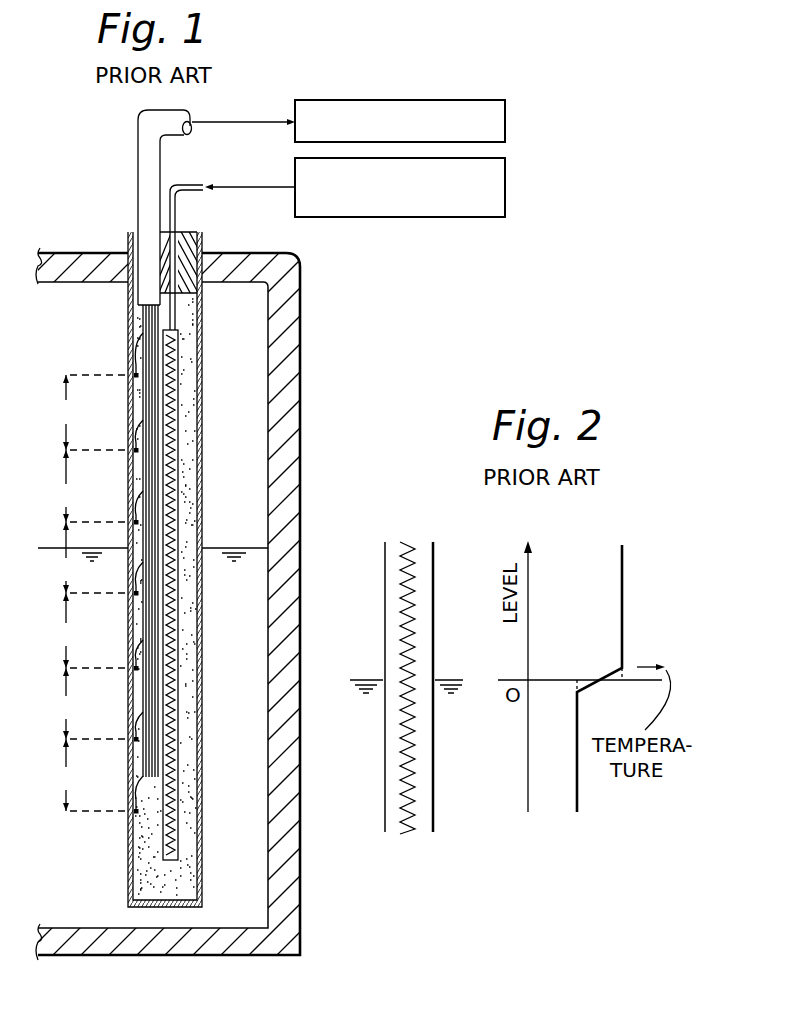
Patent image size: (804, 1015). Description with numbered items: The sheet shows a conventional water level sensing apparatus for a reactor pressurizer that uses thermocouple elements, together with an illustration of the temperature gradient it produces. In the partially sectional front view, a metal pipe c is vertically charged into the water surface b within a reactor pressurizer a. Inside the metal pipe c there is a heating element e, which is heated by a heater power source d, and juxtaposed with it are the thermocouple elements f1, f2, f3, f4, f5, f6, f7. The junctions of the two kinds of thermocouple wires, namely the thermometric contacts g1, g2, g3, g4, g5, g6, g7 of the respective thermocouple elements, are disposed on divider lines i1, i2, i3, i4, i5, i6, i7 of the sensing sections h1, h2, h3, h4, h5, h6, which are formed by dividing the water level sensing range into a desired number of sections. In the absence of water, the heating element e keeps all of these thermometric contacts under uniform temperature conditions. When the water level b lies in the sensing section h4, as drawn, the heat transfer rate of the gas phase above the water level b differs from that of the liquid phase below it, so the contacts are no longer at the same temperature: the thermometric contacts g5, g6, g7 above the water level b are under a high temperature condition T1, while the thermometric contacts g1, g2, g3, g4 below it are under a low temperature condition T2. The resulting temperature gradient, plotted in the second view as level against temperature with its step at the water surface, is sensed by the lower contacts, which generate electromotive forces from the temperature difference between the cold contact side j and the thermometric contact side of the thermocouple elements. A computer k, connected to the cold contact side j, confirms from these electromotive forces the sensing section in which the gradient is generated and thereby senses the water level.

In FIG. 1, the reactor pressurizer a is at (302, 283).
In FIG. 1, the water surface b is at (236, 548).
In FIG. 2, the water surface b is at (362, 680).
In FIG. 1, the metal pipe c is at (203, 344).
In FIG. 1, the heater power source d is at (505, 187).
In FIG. 1, the heating element e is at (172, 441).
In FIG. 2, the heating element e is at (408, 583).
In FIG. 1, the thermocouple element f1 is at (142, 776).
In FIG. 1, the thermocouple element f2 is at (142, 712).
In FIG. 1, the thermocouple element f3 is at (142, 640).
In FIG. 1, the thermocouple element f4 is at (142, 562).
In FIG. 1, the thermocouple element f5 is at (142, 491).
In FIG. 1, the thermocouple element f6 is at (142, 420).
In FIG. 1, the thermocouple element f7 is at (142, 333).
In FIG. 1, the thermometric contact g1 is at (135, 813).
In FIG. 1, the thermometric contact g2 is at (135, 740).
In FIG. 1, the thermometric contact g3 is at (135, 669).
In FIG. 1, the thermometric contact g4 is at (135, 594).
In FIG. 1, the thermometric contact g5 is at (135, 523).
In FIG. 1, the thermometric contact g6 is at (135, 451).
In FIG. 1, the thermometric contact g7 is at (135, 376).
In FIG. 1, the sensing section h1 is at (66, 775).
In FIG. 1, the sensing section h2 is at (66, 703).
In FIG. 1, the sensing section h3 is at (66, 630).
In FIG. 1, the sensing section h4 is at (66, 557).
In FIG. 1, the sensing section h5 is at (66, 486).
In FIG. 1, the sensing section h6 is at (66, 412).
In FIG. 1, the divider line i1 is at (82, 812).
In FIG. 1, the divider line i2 is at (82, 740).
In FIG. 1, the divider line i3 is at (82, 668).
In FIG. 1, the divider line i4 is at (82, 594).
In FIG. 1, the divider line i5 is at (82, 522).
In FIG. 1, the divider line i6 is at (82, 451).
In FIG. 1, the divider line i7 is at (82, 375).
In FIG. 1, the cold contact side j is at (150, 252).
In FIG. 1, the computer k is at (452, 100).
In FIG. 2, the high temperature condition T1 is at (622, 697).
In FIG. 2, the low temperature condition T2 is at (575, 666).